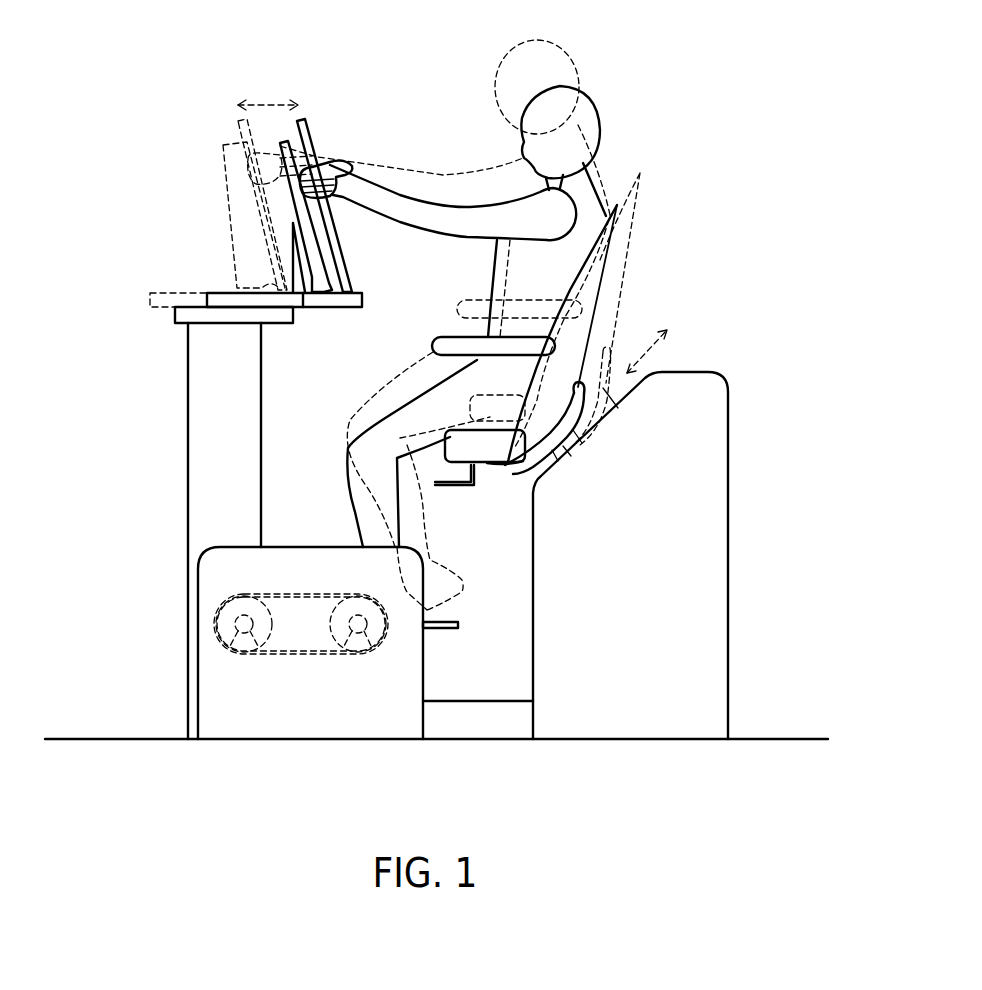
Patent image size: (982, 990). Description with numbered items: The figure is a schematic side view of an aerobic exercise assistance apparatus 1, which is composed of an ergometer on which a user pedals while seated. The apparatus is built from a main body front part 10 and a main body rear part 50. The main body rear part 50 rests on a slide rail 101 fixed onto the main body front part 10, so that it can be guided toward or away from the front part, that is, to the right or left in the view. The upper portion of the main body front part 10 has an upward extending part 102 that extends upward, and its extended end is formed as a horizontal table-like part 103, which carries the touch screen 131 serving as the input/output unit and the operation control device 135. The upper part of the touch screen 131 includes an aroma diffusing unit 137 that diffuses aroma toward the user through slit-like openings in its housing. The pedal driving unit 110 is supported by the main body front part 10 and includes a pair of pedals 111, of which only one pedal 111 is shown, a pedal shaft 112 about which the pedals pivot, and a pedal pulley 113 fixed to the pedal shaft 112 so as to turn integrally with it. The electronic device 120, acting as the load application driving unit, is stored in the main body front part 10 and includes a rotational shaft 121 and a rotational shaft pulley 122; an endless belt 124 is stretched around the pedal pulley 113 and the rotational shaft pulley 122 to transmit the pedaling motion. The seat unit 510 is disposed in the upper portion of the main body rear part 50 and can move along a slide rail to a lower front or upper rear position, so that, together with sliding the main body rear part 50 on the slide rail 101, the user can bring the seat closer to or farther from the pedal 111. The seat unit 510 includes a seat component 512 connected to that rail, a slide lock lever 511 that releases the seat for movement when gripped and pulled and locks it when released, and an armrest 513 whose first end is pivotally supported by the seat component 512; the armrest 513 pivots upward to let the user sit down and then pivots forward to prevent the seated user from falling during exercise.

The aerobic exercise assistance apparatus 1 is at (188, 62).
The main body front part 10 is at (142, 286).
The main body rear part 50 is at (733, 348).
The slide rail 101 is at (478, 725).
The upward extending part 102 is at (200, 432).
The horizontal table-like part 103 is at (180, 318).
The pedal driving unit 110 is at (448, 650).
The pedal 111 is at (458, 624).
The pedal shaft 112 is at (372, 648).
The pedal pulley 113 is at (343, 648).
The electronic device 120 is at (200, 535).
The rotational shaft 121 is at (258, 648).
The rotational shaft pulley 122 is at (229, 648).
The endless belt 124 is at (272, 596).
The touch screen 131 is at (320, 133).
The operation control device 135 is at (327, 262).
The aroma diffusing unit 137 is at (309, 124).
The seat unit 510 is at (598, 280).
The slide lock lever 511 is at (460, 490).
The seat component 512 is at (577, 340).
The armrest 513 is at (457, 343).